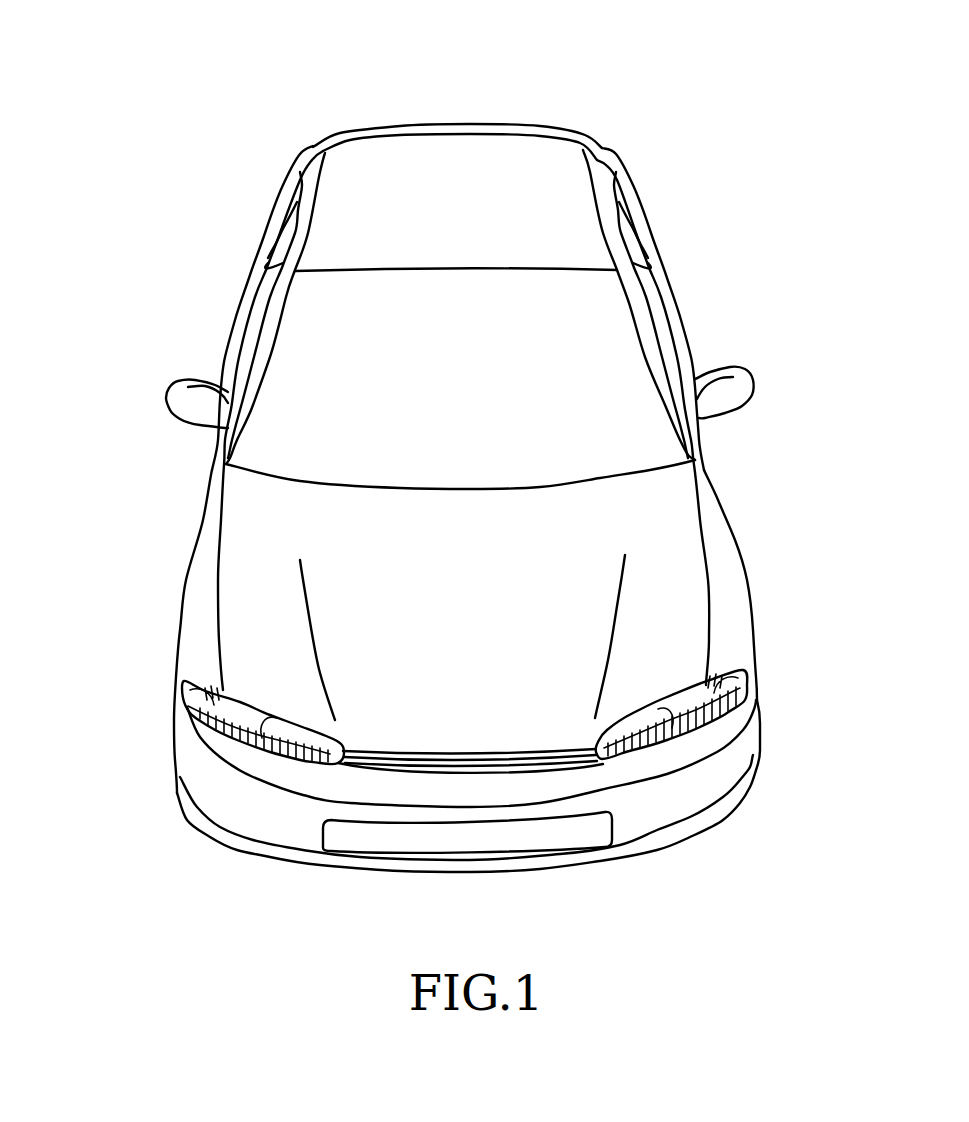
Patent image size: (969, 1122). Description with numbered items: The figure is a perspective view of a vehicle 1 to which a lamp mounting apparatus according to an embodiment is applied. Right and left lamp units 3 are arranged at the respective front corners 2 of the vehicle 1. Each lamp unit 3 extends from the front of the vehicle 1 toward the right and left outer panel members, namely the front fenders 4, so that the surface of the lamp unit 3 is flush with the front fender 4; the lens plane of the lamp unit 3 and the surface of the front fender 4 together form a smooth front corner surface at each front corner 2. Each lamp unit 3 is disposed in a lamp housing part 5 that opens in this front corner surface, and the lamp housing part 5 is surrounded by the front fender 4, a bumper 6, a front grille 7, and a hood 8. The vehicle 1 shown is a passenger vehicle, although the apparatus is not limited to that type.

The vehicle 1 is at (545, 99).
The front corner 2 is at (160, 692).
The lamp unit 3 is at (277, 755).
The front fender 4 is at (190, 627).
The lamp housing part 5 is at (199, 738).
The bumper 6 is at (213, 790).
The front grille 7 is at (510, 772).
The hood 8 is at (233, 550).